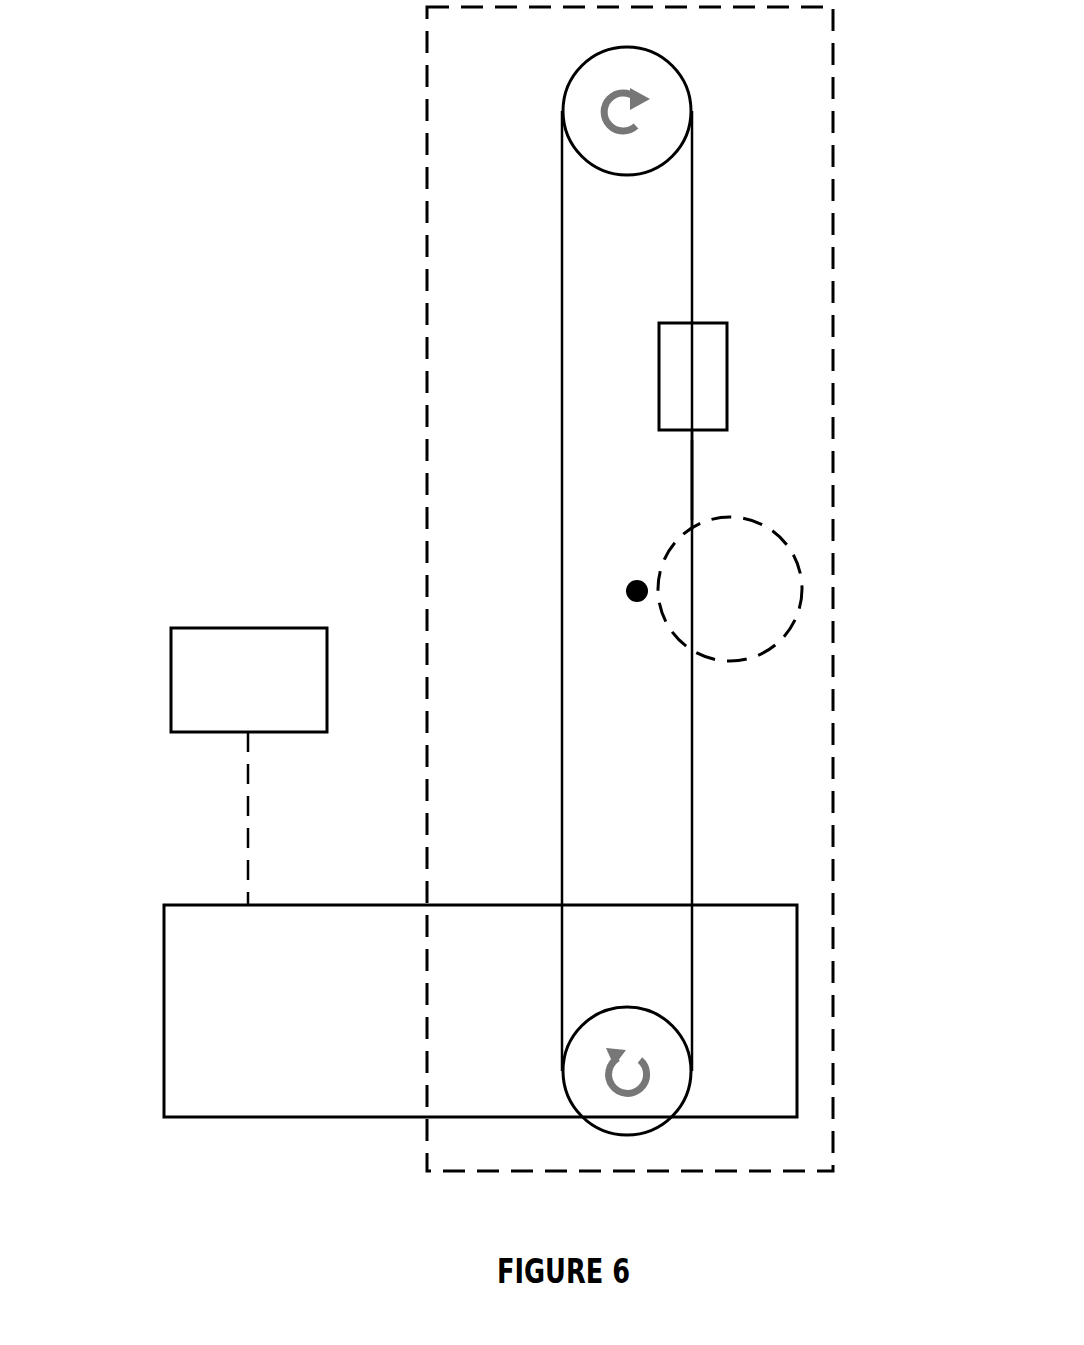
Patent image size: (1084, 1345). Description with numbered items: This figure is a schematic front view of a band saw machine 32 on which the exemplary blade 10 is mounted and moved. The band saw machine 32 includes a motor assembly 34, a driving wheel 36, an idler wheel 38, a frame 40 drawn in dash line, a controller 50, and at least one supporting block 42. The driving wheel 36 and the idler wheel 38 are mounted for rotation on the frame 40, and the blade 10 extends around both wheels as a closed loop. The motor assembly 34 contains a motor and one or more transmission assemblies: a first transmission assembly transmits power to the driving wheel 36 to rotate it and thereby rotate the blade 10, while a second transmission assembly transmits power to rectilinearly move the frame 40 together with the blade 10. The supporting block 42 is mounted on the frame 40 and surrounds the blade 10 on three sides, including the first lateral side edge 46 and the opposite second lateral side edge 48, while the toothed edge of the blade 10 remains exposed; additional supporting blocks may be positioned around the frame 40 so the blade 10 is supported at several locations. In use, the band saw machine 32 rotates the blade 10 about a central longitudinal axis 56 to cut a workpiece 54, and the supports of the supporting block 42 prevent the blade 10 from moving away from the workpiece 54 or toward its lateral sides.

The blade 10 is at (693, 250).
The band saw machine 32 is at (182, 127).
The motor assembly 34 is at (480, 1011).
The driving wheel 36 is at (632, 1026).
The idler wheel 38 is at (664, 100).
The frame 40 is at (833, 140).
The supporting block 42 is at (774, 346).
The first lateral side edge 46 is at (693, 493).
The second lateral side edge 48 is at (690, 483).
The controller 50 is at (249, 766).
The workpiece 54 is at (780, 643).
The central longitudinal axis 56 is at (637, 591).